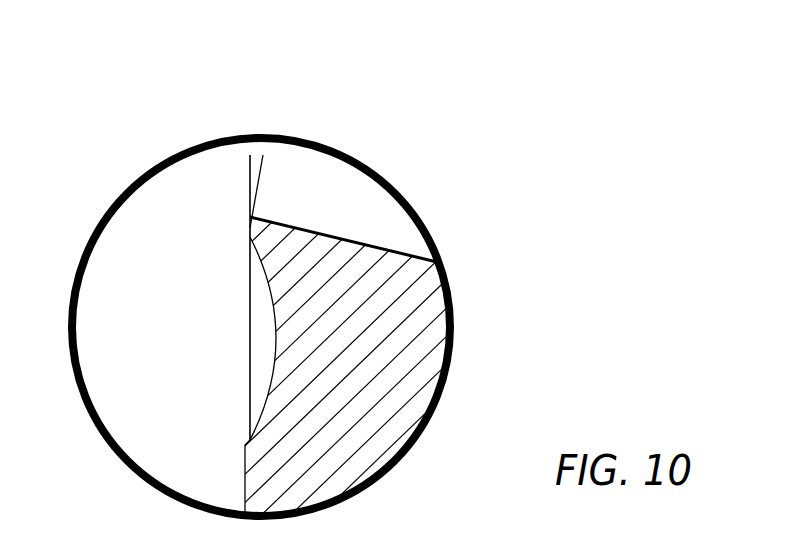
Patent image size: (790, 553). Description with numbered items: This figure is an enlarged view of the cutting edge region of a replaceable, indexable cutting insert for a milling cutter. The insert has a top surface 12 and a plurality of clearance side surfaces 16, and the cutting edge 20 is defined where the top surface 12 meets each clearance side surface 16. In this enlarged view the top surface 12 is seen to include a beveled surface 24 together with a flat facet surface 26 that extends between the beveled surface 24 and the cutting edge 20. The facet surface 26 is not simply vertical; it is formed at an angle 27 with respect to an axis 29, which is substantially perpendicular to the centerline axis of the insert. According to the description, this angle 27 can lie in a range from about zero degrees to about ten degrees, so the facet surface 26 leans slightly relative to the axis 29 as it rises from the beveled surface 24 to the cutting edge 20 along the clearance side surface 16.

The top surface 12 is at (243, 465).
The clearance side surface 16 is at (366, 240).
The cutting edge 20 is at (252, 207).
The beveled surface 24 is at (274, 329).
The facet surface 26 is at (247, 234).
The angle 27 is at (248, 165).
The axis 29 is at (250, 196).